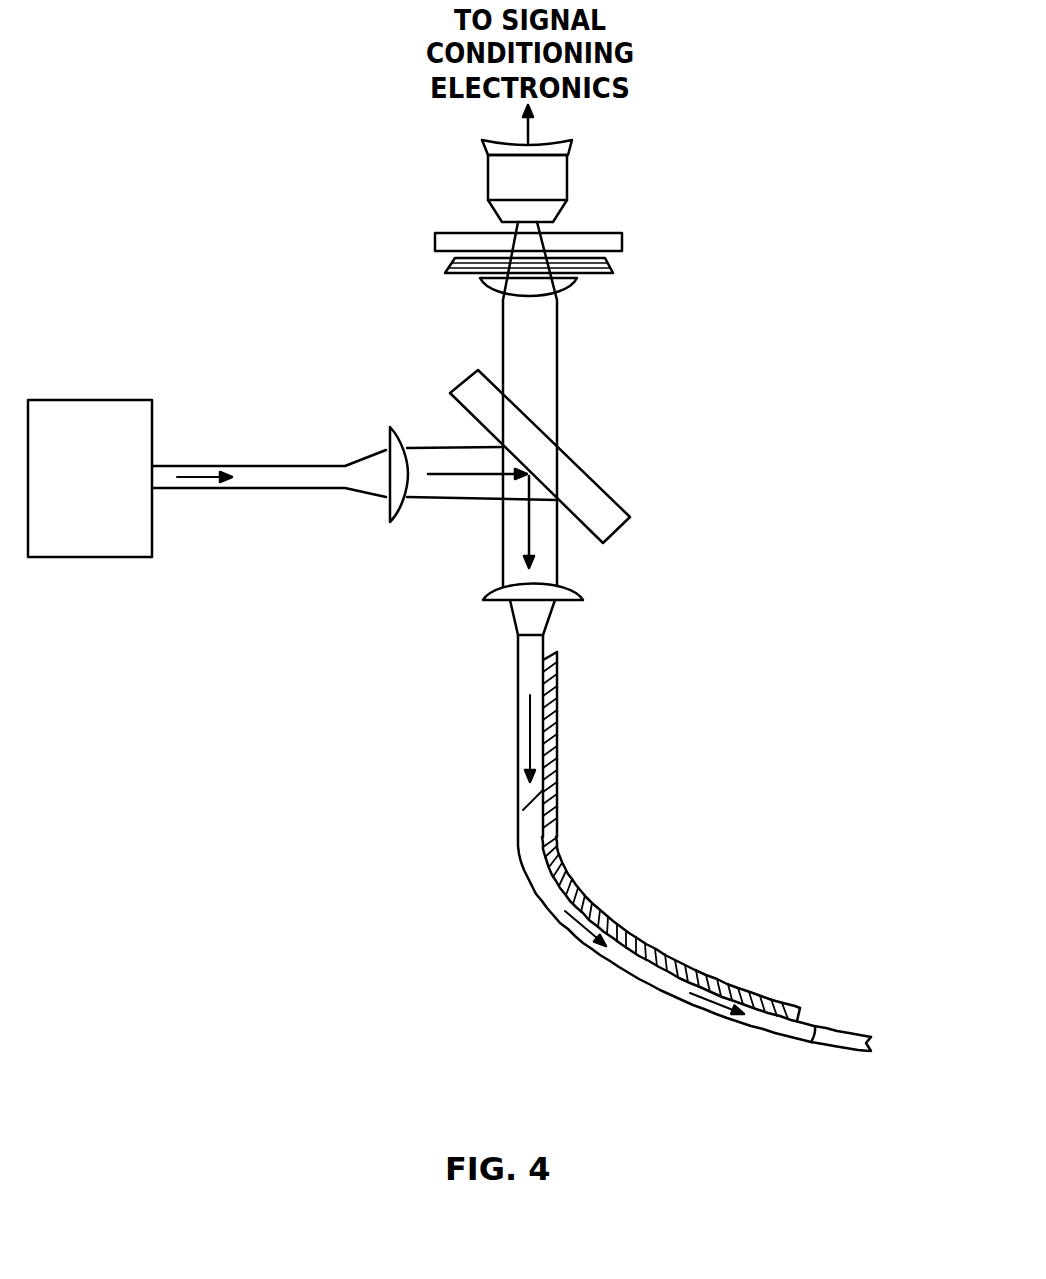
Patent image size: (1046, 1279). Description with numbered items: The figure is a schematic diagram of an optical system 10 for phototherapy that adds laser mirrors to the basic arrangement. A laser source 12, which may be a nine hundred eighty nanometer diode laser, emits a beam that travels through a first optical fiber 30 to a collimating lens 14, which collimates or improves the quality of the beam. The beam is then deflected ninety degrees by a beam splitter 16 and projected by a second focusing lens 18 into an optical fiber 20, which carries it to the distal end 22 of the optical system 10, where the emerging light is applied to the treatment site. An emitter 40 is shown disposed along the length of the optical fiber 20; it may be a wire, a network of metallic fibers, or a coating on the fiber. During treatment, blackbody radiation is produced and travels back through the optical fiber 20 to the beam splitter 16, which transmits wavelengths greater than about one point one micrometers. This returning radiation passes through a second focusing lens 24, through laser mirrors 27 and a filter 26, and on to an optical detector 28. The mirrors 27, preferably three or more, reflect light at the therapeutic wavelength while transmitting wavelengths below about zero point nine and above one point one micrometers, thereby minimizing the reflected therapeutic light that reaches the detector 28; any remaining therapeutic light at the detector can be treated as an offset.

The optical system 10 is at (293, 77).
The laser source 12 is at (104, 506).
The collimating lens 14 is at (392, 522).
The beam splitter 16 is at (630, 515).
The second focusing lens 18 is at (583, 596).
The optical fiber 20 is at (523, 863).
The distal end 22 is at (842, 1032).
The second focusing lens 24 is at (577, 282).
The filter 26 is at (622, 242).
The laser mirrors 27 is at (613, 268).
The detector 28 is at (572, 142).
The first optical fiber 30 is at (228, 489).
The emitter 40 is at (557, 808).